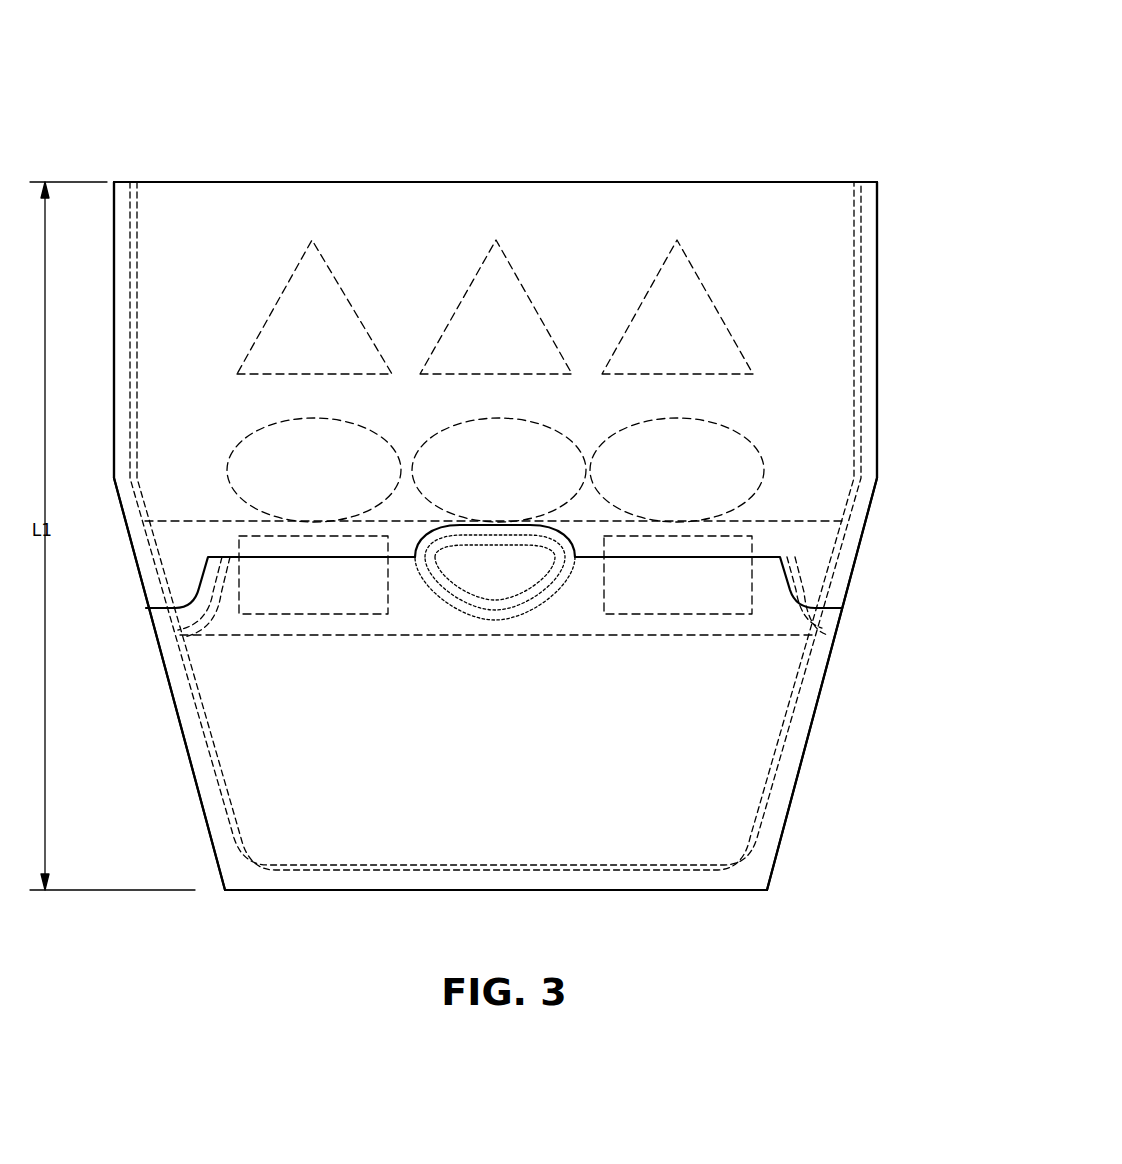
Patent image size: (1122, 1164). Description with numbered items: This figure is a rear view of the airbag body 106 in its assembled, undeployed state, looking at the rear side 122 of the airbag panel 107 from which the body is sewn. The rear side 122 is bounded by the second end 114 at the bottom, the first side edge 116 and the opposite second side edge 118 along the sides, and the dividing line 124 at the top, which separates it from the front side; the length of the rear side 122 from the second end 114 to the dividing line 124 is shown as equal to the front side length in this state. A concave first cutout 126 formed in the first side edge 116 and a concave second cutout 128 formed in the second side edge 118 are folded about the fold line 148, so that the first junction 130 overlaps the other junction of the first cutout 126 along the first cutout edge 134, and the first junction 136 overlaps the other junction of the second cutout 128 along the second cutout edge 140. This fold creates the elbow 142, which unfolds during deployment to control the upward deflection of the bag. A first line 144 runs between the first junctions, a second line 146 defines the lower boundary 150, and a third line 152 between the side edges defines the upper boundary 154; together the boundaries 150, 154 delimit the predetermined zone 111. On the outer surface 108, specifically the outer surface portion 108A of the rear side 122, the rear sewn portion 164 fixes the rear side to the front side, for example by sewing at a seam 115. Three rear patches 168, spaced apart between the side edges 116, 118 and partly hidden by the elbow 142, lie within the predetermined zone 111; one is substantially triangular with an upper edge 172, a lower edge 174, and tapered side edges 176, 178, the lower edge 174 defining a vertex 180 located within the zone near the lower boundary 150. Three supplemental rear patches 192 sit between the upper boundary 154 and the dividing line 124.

The airbag body 106 is at (718, 90).
The airbag panel 107 is at (377, 130).
The outer surface 108 is at (830, 215).
The outer surface portion 108A is at (830, 372).
The predetermined zone 111 is at (818, 540).
The second end 114 is at (410, 890).
The seam 115 is at (538, 540).
The first side edge 116 is at (114, 287).
The second side edge 118 is at (877, 300).
The rear side 122 is at (80, 168).
The dividing line 124 is at (570, 182).
The first cutout 126 is at (178, 573).
The second cutout 128 is at (797, 575).
The first junction 130 is at (147, 607).
The first cutout edge 134 is at (204, 575).
The first junction 136 is at (842, 607).
The second cutout edge 140 is at (795, 592).
The elbow 142 is at (582, 607).
The first line 144 is at (657, 636).
The second line 146 is at (720, 637).
The fold line 148 is at (765, 555).
The lower boundary 150 is at (355, 636).
The third line 152 is at (760, 521).
The upper boundary 154 is at (830, 521).
The rear sewn portion 164 is at (410, 547).
The rear patch 168 is at (364, 424).
The upper edge 172 is at (437, 527).
The lower edge 174 is at (520, 529).
The tapered side edge 176 is at (425, 585).
The tapered side edge 178 is at (548, 605).
The vertex 180 is at (492, 622).
The supplemental rear patch 192 is at (262, 318).